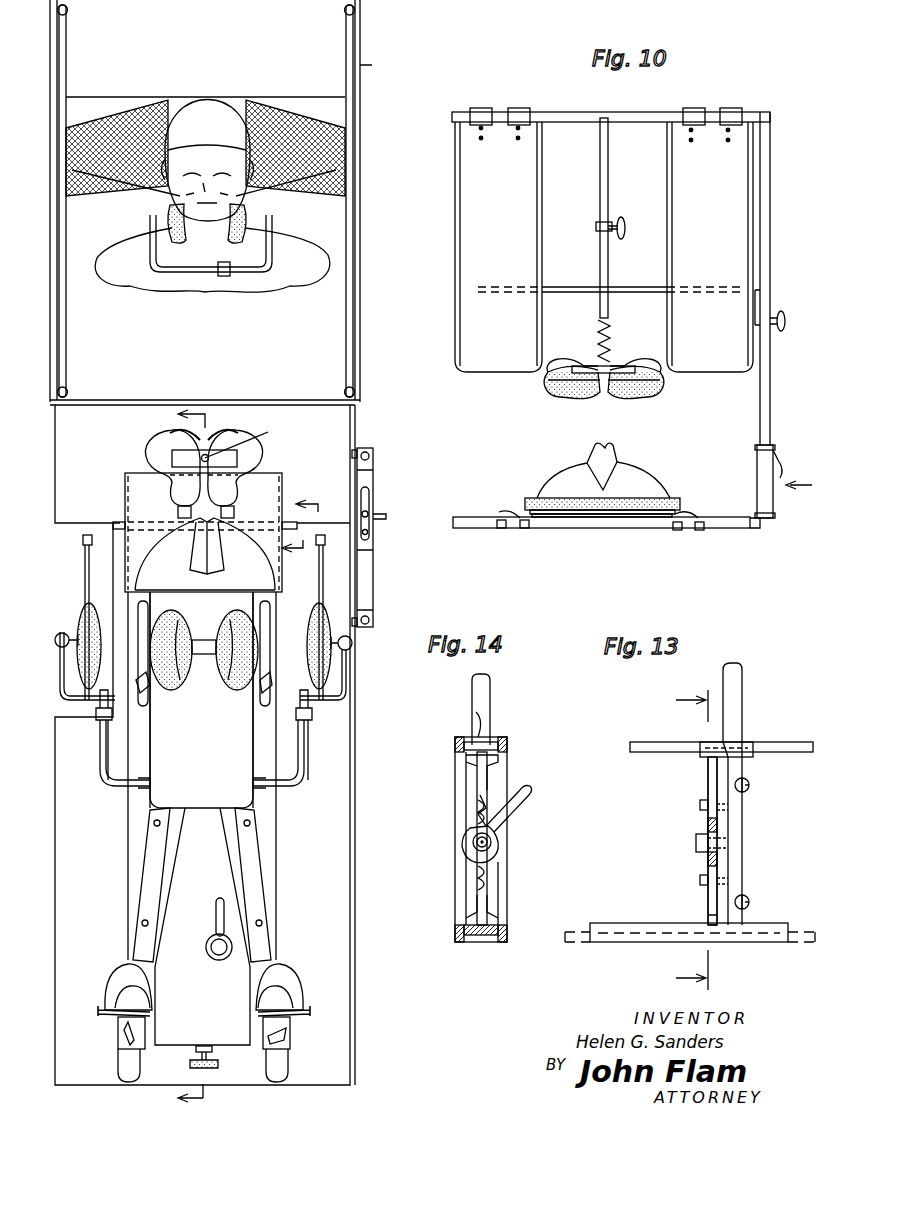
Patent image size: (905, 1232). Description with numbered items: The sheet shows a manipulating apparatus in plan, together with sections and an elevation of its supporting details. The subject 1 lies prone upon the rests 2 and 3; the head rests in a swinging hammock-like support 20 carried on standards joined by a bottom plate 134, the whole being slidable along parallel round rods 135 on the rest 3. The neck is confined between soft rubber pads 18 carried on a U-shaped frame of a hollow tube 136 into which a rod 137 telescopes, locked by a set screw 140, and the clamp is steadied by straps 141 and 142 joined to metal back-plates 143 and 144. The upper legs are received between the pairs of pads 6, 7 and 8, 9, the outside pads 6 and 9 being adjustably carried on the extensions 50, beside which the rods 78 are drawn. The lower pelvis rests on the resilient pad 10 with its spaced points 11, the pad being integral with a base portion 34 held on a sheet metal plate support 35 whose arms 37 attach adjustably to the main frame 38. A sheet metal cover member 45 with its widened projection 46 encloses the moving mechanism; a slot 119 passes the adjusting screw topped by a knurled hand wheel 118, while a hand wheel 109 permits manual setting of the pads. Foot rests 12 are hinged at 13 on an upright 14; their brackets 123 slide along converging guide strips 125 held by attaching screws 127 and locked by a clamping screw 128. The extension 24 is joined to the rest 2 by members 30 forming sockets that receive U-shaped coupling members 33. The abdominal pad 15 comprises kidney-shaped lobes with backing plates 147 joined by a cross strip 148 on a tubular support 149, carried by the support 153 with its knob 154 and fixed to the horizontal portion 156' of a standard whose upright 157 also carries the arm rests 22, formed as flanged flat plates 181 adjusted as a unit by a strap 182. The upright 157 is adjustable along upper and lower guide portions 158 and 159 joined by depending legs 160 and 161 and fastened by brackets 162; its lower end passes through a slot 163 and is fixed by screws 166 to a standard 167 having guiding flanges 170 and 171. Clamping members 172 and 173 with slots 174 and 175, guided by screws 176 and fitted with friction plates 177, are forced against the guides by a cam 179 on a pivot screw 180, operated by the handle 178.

In FIG. 11, the subject 1 is at (140, 286).
In FIG. 11, the rest 2 is at (82, 812).
In FIG. 11, the rest 3 is at (258, 40).
In FIG. 11, the pad 6 is at (78, 610).
In FIG. 11, the pad 7 is at (176, 612).
In FIG. 11, the pad 8 is at (238, 612).
In FIG. 11, the pad 9 is at (308, 614).
In FIG. 11, the pad 10 is at (178, 540).
In FIG. 10, the pad 10 is at (630, 478).
In FIG. 10, the spaced points 11 is at (596, 446).
In FIG. 11, the foot rests 12 is at (92, 972).
In FIG. 10, the hinge 13 is at (800, 477).
In FIG. 11, the upright 14 is at (98, 1010).
In FIG. 13, the upright 14 is at (678, 838).
In FIG. 11, the abdominal pad 15 is at (254, 430).
In FIG. 10, the abdominal pad 15 is at (560, 400).
In FIG. 11, the soft rubber pads 18 is at (170, 203).
In FIG. 11, the hammock-like support 20 is at (266, 112).
In FIG. 10, the arm rests 22 is at (500, 244).
In FIG. 11, the forwardly extending portion 24 is at (94, 456).
In FIG. 10, the forwardly extending portion 24 is at (585, 530).
In FIG. 11, the members 30 is at (83, 536).
In FIG. 10, the members 30 is at (504, 516).
In FIG. 11, the U-shaped coupling members 33 is at (116, 522).
In FIG. 10, the U-shaped coupling members 33 is at (510, 502).
In FIG. 11, the base portion 34 is at (282, 478).
In FIG. 10, the base portion 34 is at (655, 500).
In FIG. 10, the sheet metal plate support 35 is at (690, 508).
In FIG. 10, the arms 37 is at (548, 506).
In FIG. 11, the main frame 38 is at (268, 808).
In FIG. 10, the main frame 38 is at (684, 515).
In FIG. 11, the cover member 45 is at (208, 882).
In FIG. 11, the projection 46 is at (222, 750).
In FIG. 11, the extensions 50 is at (100, 746).
In FIG. 11, the vertical rod 78 is at (84, 572).
In FIG. 11, the hand wheel 109 is at (216, 1064).
In FIG. 11, the knurled hand wheel 118 is at (214, 958).
In FIG. 11, the slot 119 is at (216, 916).
In FIG. 11, the bracket 123 is at (118, 1036).
In FIG. 11, the guide strip 125 is at (142, 890).
In FIG. 11, the attaching screws 127 is at (152, 826).
In FIG. 11, the clamping screw 128 is at (118, 1052).
In FIG. 11, the bottom plate 134 is at (116, 100).
In FIG. 11, the round rods 135 is at (68, 62).
In FIG. 11, the hollow tube 136 is at (150, 236).
In FIG. 11, the rod 137 is at (232, 276).
In FIG. 11, the set screw 140 is at (222, 278).
In FIG. 11, the strap 141 is at (86, 178).
In FIG. 11, the strap 142 is at (312, 180).
In FIG. 11, the metal back-plate 143 is at (246, 212).
In FIG. 11, the metal back-plate 144 is at (170, 212).
In FIG. 11, the metal backing plate 147 is at (165, 440).
In FIG. 10, the metal backing plate 147 is at (550, 362).
In FIG. 11, the cross strip 148 is at (212, 470).
In FIG. 10, the cross strip 148 is at (588, 354).
In FIG. 11, the tubular support 149 is at (270, 436).
In FIG. 10, the support 153 is at (609, 180).
In FIG. 10, the knob 154 is at (624, 224).
In FIG. 10, the horizontal portion 156' is at (611, 106).
In FIG. 11, the upright 157 is at (386, 516).
In FIG. 10, the upright 157 is at (771, 210).
In FIG. 14, the upright 157 is at (491, 700).
In FIG. 13, the upright 157 is at (743, 682).
In FIG. 11, the upper horizontal guide portion 158 is at (370, 492).
In FIG. 13, the upper horizontal guide portion 158 is at (678, 744).
In FIG. 13, the lower horizontal guide portion 159 is at (572, 944).
In FIG. 11, the depending leg 160 is at (374, 578).
In FIG. 10, the depending leg 160 is at (774, 500).
In FIG. 11, the depending leg 161 is at (374, 468).
In FIG. 11, the brackets 162 is at (348, 452).
In FIG. 10, the brackets 162 is at (760, 528).
In FIG. 11, the slot 163 is at (368, 534).
In FIG. 14, the slot 163 is at (474, 722).
In FIG. 13, the screws 166 is at (750, 786).
In FIG. 14, the standard 167 is at (500, 878).
In FIG. 13, the standard 167 is at (712, 786).
In FIG. 14, the guiding flanges 170 is at (456, 746).
In FIG. 13, the guiding flanges 170 is at (752, 746).
In FIG. 14, the guiding flanges 171 is at (456, 934).
In FIG. 13, the guiding flanges 171 is at (650, 926).
In FIG. 14, the clamping member 172 is at (476, 794).
In FIG. 13, the clamping member 172 is at (708, 774).
In FIG. 14, the clamping member 173 is at (464, 894).
In FIG. 13, the clamping member 173 is at (710, 908).
In FIG. 14, the slot 174 is at (488, 810).
In FIG. 14, the slot 175 is at (500, 896).
In FIG. 14, the screws 176 is at (476, 806).
In FIG. 13, the screws 176 is at (700, 806).
In FIG. 14, the friction plates 177 is at (470, 758).
In FIG. 10, the operating handle 178 is at (778, 474).
In FIG. 14, the operating handle 178 is at (530, 798).
In FIG. 14, the cam 179 is at (462, 840).
In FIG. 13, the cam 179 is at (708, 826).
In FIG. 14, the pivot screw 180 is at (492, 842).
In FIG. 13, the pivot screw 180 is at (696, 846).
In FIG. 10, the flanged flat plates 181 is at (496, 374).
In FIG. 10, the strap 182 is at (616, 288).